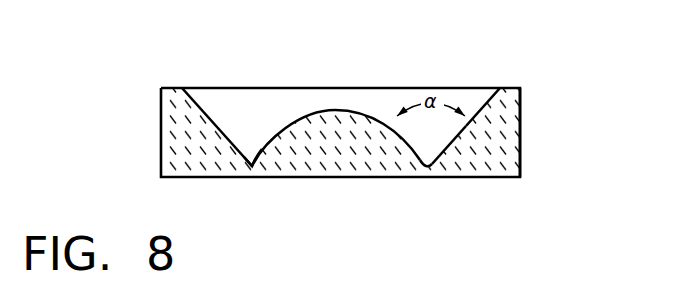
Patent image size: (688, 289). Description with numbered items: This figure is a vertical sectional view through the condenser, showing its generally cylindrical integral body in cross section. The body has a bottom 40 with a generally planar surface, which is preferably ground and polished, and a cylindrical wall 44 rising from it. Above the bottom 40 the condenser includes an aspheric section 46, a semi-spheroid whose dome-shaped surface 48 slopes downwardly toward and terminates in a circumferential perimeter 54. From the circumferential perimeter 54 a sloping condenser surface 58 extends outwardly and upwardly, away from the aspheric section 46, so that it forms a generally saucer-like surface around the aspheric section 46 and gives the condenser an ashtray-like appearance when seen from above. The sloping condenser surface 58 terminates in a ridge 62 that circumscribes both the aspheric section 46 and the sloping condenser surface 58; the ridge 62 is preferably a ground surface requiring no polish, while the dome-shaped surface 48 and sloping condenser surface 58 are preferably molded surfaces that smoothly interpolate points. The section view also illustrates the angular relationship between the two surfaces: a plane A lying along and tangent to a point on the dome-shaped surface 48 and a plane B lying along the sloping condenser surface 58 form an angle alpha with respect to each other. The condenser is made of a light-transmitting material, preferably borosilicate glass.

The bottom 40 is at (207, 177).
The cylindrical wall 44 is at (520, 135).
The aspheric section 46 is at (321, 111).
The dome-shaped surface 48 is at (351, 111).
The circumferential perimeter 54 is at (251, 162).
The sloping condenser surface 58 is at (191, 98).
The ridge 62 is at (504, 88).
The plane A is at (397, 114).
The plane B is at (464, 114).